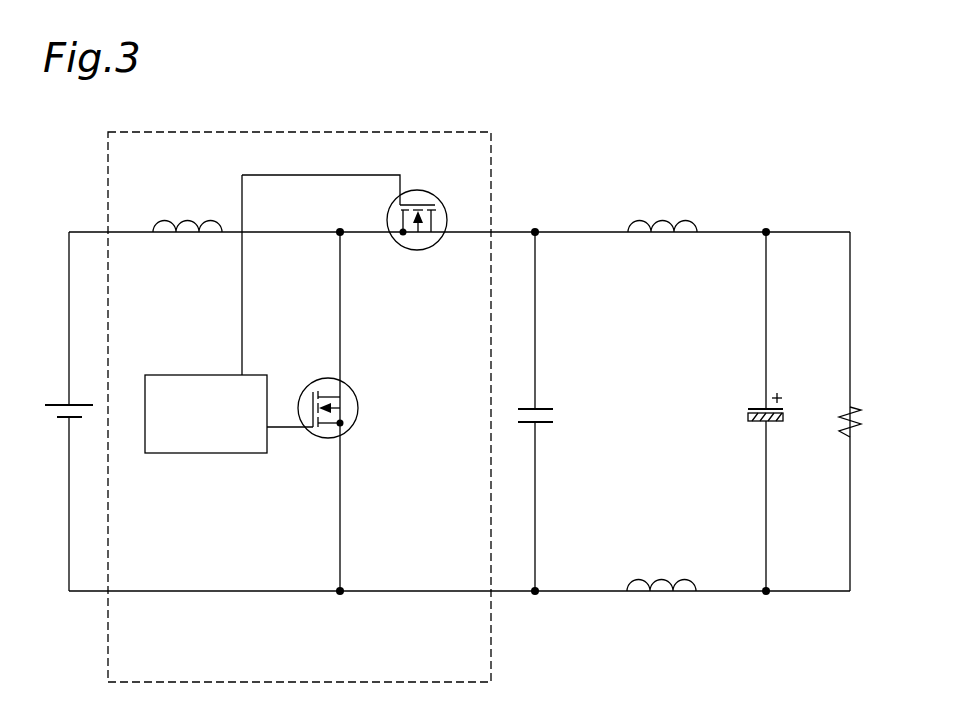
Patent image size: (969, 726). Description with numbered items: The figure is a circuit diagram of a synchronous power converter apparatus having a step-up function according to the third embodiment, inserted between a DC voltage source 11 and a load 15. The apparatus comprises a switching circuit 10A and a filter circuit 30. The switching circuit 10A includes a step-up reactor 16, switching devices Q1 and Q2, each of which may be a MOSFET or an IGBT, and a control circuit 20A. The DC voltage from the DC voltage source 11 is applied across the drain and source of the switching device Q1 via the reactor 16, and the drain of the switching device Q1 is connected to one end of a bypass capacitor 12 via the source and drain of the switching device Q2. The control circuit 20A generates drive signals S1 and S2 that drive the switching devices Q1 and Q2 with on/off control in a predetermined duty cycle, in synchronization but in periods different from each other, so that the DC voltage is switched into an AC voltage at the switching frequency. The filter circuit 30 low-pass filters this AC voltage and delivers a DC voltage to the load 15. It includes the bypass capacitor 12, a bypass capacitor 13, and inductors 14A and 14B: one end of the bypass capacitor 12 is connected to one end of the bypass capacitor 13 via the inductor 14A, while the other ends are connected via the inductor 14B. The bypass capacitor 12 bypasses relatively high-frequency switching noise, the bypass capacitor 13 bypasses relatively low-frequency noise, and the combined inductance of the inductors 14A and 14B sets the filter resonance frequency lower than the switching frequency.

The switching circuit 10A is at (240, 132).
The DC voltage source 11 is at (52, 405).
The bypass capacitor 12 is at (542, 409).
The bypass capacitor 13 is at (782, 393).
The inductor 14A is at (662, 220).
The inductor 14B is at (662, 578).
The load 15 is at (853, 407).
The step-up reactor 16 is at (188, 220).
The control circuit 20A is at (197, 375).
The filter circuit 30 is at (665, 413).
The switching device Q1 is at (345, 428).
The switching device Q2 is at (412, 250).
The drive signal S1 is at (282, 427).
The drive signal S2 is at (321, 193).